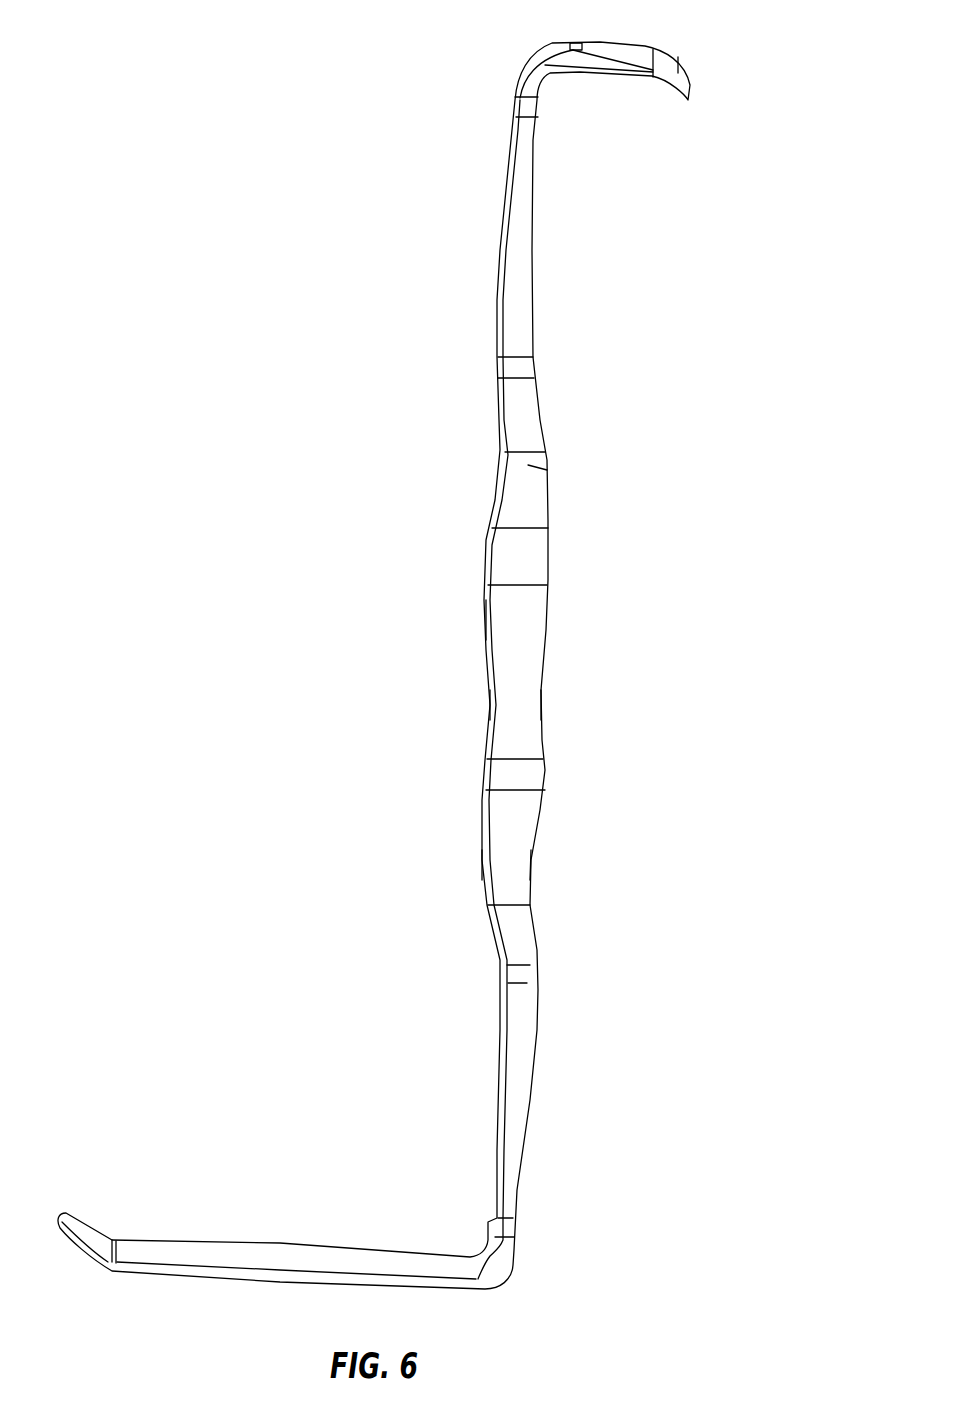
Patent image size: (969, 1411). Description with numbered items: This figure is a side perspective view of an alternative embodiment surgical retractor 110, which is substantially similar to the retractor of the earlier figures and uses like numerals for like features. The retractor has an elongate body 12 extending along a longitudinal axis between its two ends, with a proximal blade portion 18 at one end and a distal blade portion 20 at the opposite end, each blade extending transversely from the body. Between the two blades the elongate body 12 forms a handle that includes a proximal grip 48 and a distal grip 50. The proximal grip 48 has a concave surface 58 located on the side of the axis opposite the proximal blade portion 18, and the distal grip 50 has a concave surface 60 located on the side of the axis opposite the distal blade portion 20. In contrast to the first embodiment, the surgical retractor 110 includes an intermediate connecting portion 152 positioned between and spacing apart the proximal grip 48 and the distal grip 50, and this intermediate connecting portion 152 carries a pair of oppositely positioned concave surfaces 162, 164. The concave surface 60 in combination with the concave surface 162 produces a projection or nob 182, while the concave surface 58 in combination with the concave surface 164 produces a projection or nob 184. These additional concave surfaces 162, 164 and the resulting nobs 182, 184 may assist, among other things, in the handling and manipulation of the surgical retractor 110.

The surgical retractor 110 is at (296, 61).
The elongate body 12 is at (498, 250).
The proximal blade portion 18 is at (611, 45).
The distal blade portion 20 is at (262, 1257).
The proximal grip 48 is at (530, 488).
The concave surface 58 is at (500, 488).
The nob 184 is at (483, 583).
The intermediate connecting portion 152 is at (552, 610).
The concave surface 164 is at (490, 702).
The concave surface 162 is at (543, 702).
The nob 182 is at (546, 768).
The distal grip 50 is at (497, 865).
The concave surface 60 is at (530, 865).